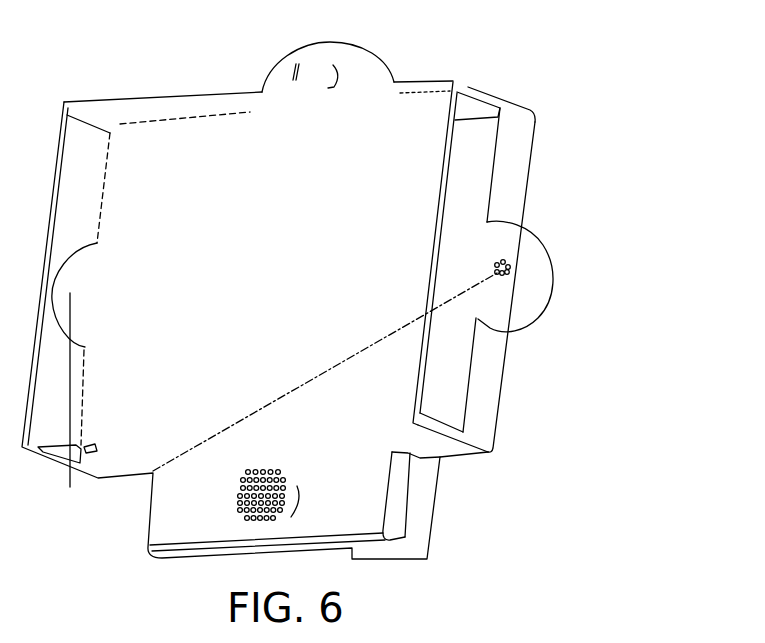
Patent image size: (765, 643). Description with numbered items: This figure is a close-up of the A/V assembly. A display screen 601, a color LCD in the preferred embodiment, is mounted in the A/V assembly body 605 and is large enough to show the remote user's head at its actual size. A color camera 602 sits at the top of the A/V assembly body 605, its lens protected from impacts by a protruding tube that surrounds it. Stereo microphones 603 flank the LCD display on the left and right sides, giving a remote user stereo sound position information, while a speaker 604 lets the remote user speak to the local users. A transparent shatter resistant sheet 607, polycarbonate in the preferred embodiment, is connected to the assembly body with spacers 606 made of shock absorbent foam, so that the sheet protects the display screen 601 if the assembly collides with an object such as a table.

The display screen 601 is at (462, 183).
The color camera 602 is at (283, 63).
The stereo microphones 603 is at (140, 477).
The speaker 604 is at (245, 490).
The A/V assembly body 605 is at (480, 403).
The spacers 606 is at (470, 88).
The transparent shatter resistant sheet 607 is at (133, 102).